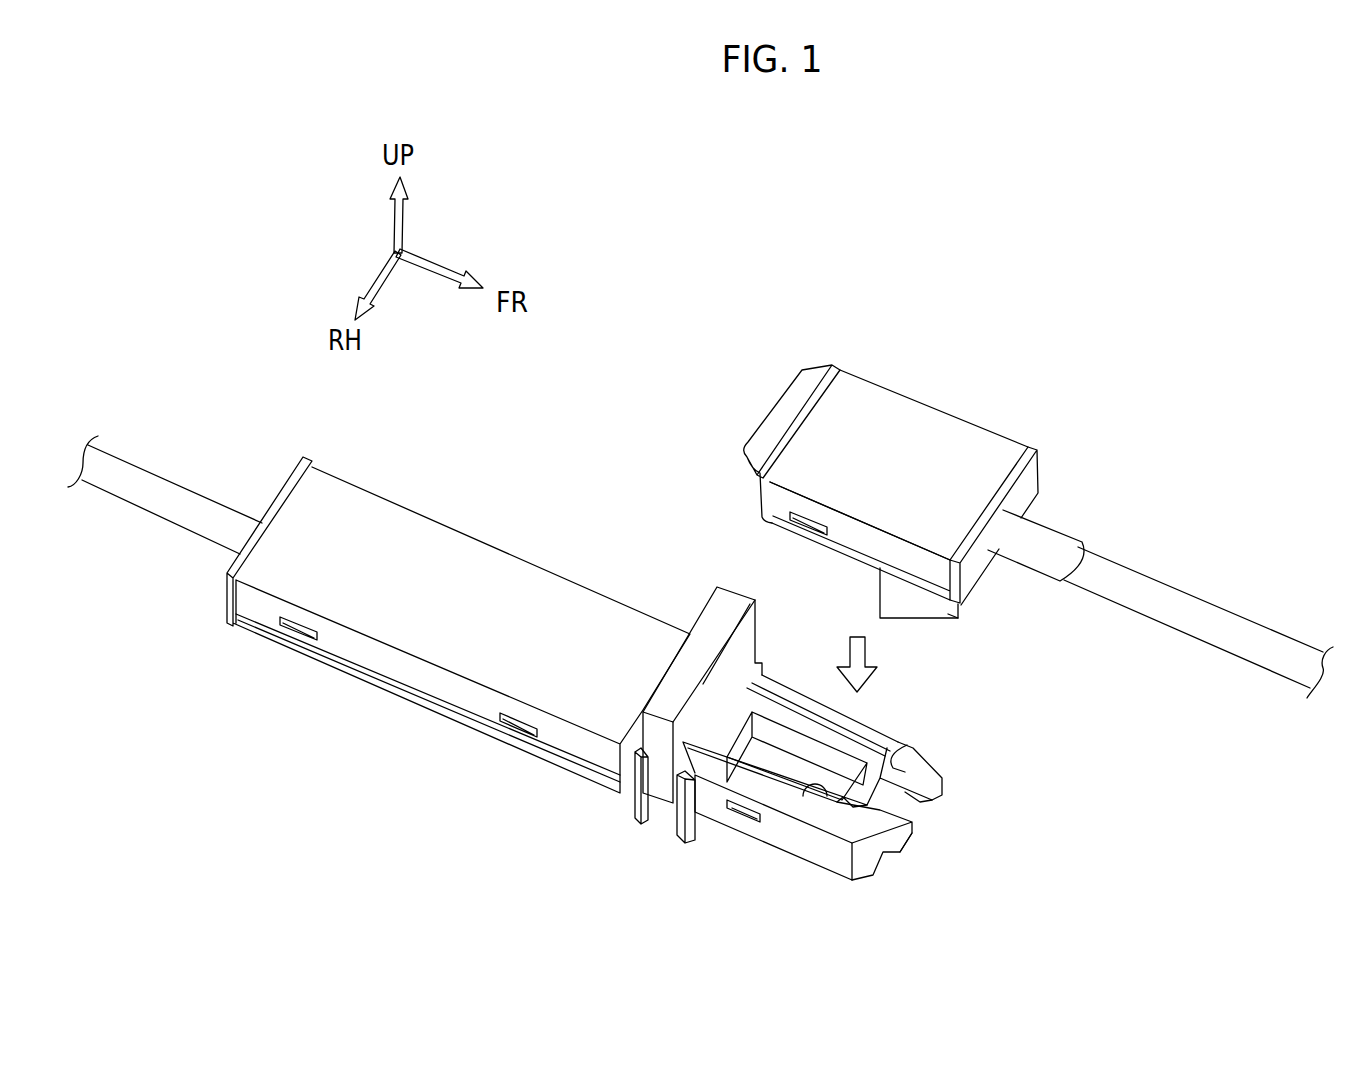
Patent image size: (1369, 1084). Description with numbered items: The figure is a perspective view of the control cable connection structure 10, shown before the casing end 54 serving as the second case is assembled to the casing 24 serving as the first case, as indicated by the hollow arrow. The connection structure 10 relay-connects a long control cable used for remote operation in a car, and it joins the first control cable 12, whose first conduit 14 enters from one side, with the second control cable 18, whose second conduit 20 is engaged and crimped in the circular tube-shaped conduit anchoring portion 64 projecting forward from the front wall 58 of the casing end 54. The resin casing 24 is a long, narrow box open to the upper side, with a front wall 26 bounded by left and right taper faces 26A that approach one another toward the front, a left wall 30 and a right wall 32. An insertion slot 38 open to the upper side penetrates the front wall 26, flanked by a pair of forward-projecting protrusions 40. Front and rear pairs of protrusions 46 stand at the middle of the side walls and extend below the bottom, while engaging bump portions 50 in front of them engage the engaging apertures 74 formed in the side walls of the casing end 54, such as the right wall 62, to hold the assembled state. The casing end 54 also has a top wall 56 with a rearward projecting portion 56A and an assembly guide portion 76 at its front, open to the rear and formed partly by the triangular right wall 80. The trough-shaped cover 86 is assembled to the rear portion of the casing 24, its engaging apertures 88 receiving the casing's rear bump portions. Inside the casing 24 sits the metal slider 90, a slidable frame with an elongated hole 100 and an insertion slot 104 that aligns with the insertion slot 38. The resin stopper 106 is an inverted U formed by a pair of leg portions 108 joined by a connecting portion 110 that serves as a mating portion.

The control cable connection structure 10 is at (695, 290).
The first control cable 12 is at (166, 471).
The first conduit 14 is at (210, 498).
The second control cable 18 is at (1192, 597).
The second conduit 20 is at (1258, 625).
The casing 24 is at (758, 840).
The front wall 26 is at (880, 860).
The taper faces 26A is at (867, 867).
The left wall 30 is at (863, 717).
The right wall 32 is at (777, 833).
The insertion slot 38 is at (933, 773).
The protrusions 40 is at (937, 793).
The protrusions 46 is at (632, 807).
The engaging bump portions 50 is at (742, 820).
The casing end 54 is at (912, 387).
The top wall 56 is at (952, 440).
The projecting portion 56A is at (792, 407).
The front wall 58 is at (1032, 477).
The right wall 62 is at (862, 545).
The conduit anchoring portion 64 is at (1043, 542).
The engaging apertures 74 is at (792, 527).
The assembly guide portion 76 is at (952, 623).
The right wall 80 is at (907, 607).
The cover 86 is at (470, 532).
The engaging apertures 88 is at (295, 637).
The slider 90 is at (782, 717).
The elongated hole 100 is at (809, 778).
The insertion slot 104 is at (887, 747).
The stopper 106 is at (720, 592).
The leg portions 108 is at (760, 627).
The connecting portion 110 is at (660, 653).